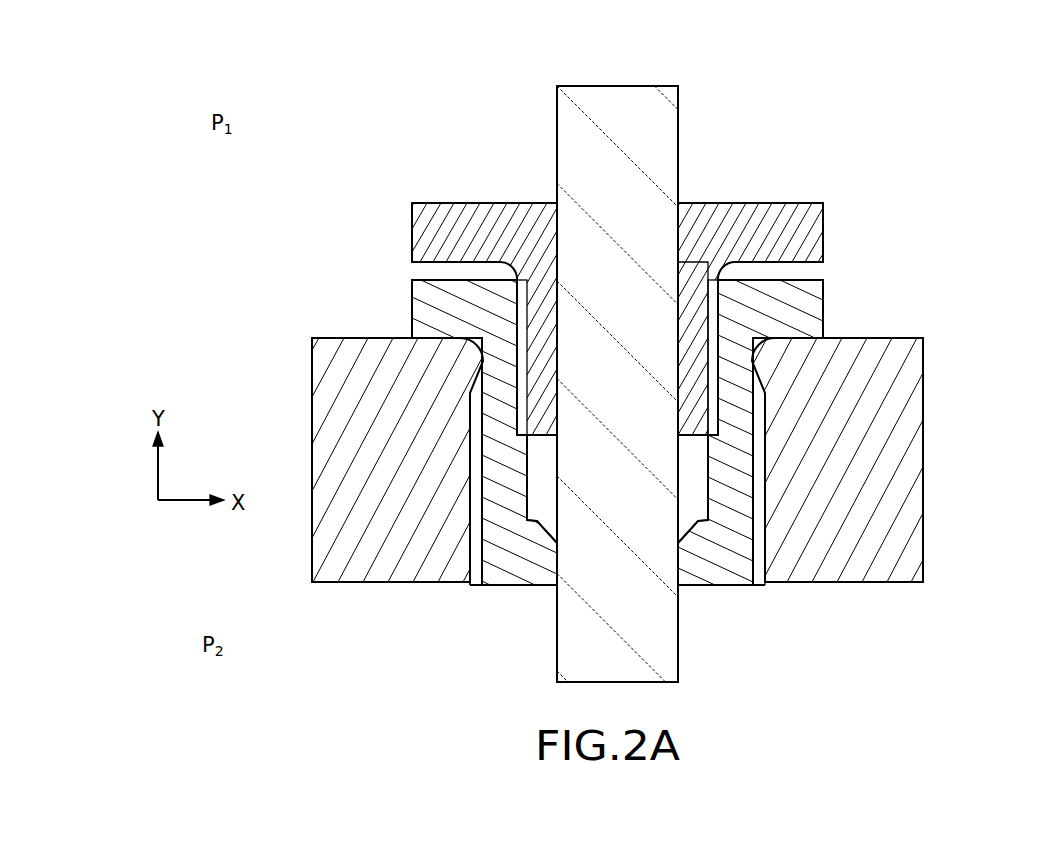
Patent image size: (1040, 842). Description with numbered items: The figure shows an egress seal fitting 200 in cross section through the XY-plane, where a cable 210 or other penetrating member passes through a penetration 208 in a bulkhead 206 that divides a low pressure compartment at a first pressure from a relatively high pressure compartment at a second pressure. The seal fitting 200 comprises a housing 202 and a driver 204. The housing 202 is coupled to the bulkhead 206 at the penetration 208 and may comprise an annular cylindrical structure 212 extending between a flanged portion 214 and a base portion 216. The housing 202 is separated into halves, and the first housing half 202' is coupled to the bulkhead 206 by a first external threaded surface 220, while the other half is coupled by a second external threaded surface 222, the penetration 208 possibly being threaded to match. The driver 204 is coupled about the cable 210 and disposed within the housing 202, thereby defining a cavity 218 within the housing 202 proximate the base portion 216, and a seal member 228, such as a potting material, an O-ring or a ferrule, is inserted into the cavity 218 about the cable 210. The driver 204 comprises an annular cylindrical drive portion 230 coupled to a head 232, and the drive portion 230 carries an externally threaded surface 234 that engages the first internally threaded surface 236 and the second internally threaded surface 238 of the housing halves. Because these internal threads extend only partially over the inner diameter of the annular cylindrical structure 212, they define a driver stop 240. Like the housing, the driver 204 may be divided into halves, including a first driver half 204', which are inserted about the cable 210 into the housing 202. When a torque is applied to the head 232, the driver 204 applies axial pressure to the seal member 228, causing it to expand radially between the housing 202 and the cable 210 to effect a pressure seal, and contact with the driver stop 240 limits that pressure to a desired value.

The egress seal fitting 200 is at (938, 118).
The housing 202 is at (646, 432).
The first housing half 202' is at (750, 432).
The driver 204 is at (649, 274).
The first driver half 204' is at (750, 296).
The bulkhead 206 is at (903, 423).
The penetration 208 is at (467, 577).
The cable 210 is at (650, 122).
The annular cylindrical structure 212 is at (485, 483).
The flanged portion 214 is at (428, 298).
The base portion 216 is at (527, 568).
The cavity 218 is at (543, 483).
The first external threaded surface 220 is at (760, 458).
The second external threaded surface 222 is at (475, 457).
The seal member 228 is at (683, 500).
The annular cylindrical drive portion 230 is at (690, 333).
The head 232 is at (803, 223).
The externally threaded surface 234 is at (710, 310).
The first internally threaded surface 236 is at (715, 322).
The second internally threaded surface 238 is at (518, 307).
The driver stop 240 is at (703, 430).